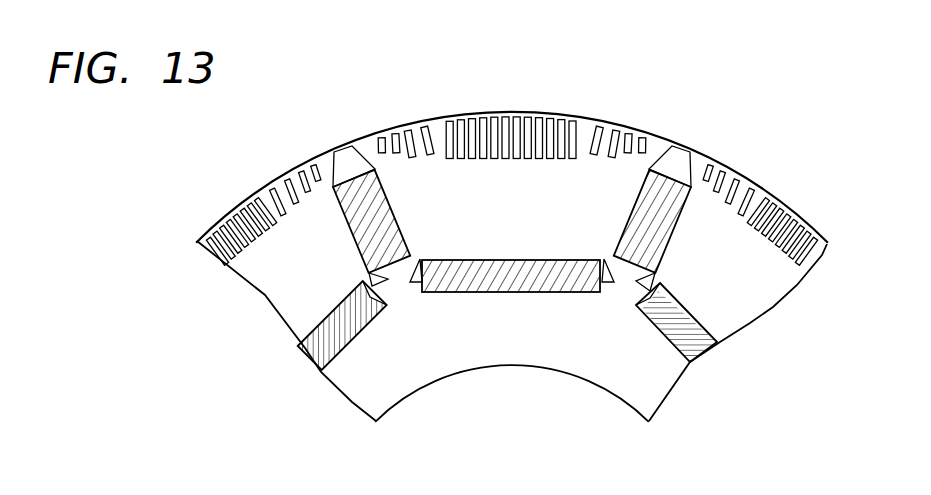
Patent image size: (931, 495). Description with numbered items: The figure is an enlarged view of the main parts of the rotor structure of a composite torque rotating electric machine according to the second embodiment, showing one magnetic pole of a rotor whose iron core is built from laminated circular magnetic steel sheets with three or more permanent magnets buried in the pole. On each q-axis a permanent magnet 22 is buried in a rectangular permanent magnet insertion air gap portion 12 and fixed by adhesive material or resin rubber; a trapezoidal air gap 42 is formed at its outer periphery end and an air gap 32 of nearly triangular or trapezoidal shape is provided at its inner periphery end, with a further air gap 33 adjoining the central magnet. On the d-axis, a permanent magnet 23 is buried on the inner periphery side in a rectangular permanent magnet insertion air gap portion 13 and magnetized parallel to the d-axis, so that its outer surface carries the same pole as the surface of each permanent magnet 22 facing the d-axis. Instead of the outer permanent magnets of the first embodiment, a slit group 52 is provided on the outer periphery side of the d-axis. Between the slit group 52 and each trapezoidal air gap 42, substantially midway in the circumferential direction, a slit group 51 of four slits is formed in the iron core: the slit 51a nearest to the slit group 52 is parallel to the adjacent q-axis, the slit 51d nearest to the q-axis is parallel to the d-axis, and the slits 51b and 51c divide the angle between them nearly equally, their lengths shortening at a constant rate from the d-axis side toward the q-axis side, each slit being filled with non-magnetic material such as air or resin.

The permanent magnet insertion air gap portion 12 is at (338, 205).
The permanent magnet insertion air gap portion 13 is at (488, 293).
The permanent magnet 22 is at (365, 237).
The permanent magnet 23 is at (548, 277).
The air gap 32 is at (627, 277).
The air gap 33 is at (417, 277).
The air gap having trapezoidal shape 42 is at (337, 163).
The slit group 51 is at (455, 60).
The slit 51a is at (424, 127).
The slit 51b is at (407, 130).
The slit 51c is at (395, 133).
The slit 51d is at (380, 137).
The slit group 52 is at (503, 113).